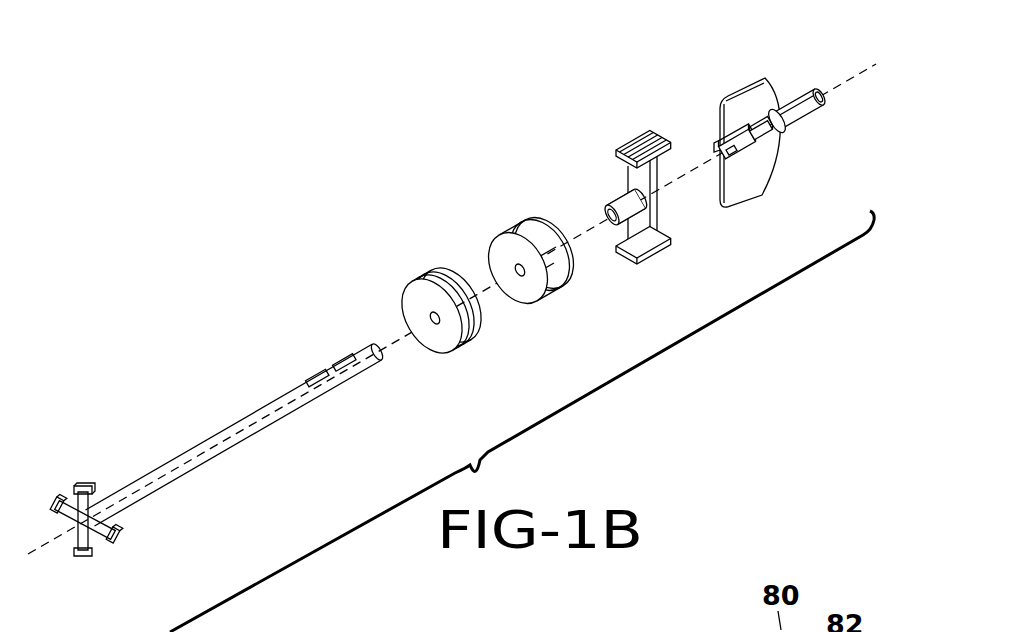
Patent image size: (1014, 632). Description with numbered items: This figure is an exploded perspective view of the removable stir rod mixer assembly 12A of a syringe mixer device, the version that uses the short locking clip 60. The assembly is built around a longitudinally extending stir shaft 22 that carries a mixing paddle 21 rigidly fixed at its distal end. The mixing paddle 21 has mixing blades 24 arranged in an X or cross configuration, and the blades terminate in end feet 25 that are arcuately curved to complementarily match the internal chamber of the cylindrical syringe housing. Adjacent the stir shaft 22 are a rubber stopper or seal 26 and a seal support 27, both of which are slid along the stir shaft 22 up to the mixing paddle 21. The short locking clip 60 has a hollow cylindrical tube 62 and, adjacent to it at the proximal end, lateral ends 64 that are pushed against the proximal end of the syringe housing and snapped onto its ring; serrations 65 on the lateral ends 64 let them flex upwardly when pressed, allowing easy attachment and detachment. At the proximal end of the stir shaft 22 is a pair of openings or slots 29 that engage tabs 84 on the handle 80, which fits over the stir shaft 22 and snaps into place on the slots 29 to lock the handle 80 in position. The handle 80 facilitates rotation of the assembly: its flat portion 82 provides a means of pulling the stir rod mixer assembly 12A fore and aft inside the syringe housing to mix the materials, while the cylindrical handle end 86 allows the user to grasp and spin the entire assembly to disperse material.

The stir rod mixer assembly 12A is at (361, 243).
The mixing paddle 21 is at (77, 527).
The stir shaft 22 is at (185, 462).
The mixing blades 24 is at (67, 500).
The end feet 25 is at (115, 537).
The seal 26 is at (448, 338).
The seal support 27 is at (535, 232).
The slots 29 is at (347, 360).
The short locking clip 60 is at (621, 263).
The hollow cylindrical tube 62 is at (610, 207).
The lateral ends 64 is at (632, 143).
The serrations 65 is at (658, 142).
The handle 80 is at (728, 91).
The flat portion 82 is at (758, 103).
The tabs 84 is at (737, 157).
The handle end 86 is at (802, 113).